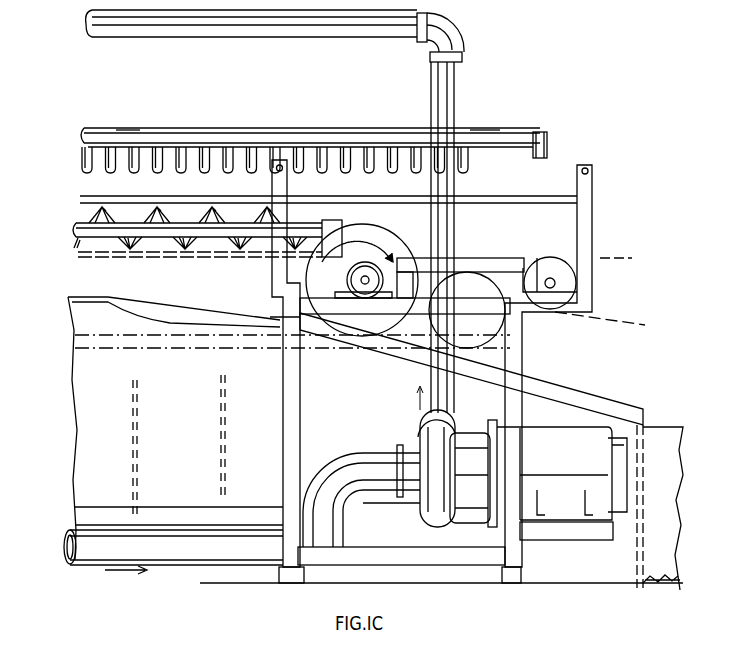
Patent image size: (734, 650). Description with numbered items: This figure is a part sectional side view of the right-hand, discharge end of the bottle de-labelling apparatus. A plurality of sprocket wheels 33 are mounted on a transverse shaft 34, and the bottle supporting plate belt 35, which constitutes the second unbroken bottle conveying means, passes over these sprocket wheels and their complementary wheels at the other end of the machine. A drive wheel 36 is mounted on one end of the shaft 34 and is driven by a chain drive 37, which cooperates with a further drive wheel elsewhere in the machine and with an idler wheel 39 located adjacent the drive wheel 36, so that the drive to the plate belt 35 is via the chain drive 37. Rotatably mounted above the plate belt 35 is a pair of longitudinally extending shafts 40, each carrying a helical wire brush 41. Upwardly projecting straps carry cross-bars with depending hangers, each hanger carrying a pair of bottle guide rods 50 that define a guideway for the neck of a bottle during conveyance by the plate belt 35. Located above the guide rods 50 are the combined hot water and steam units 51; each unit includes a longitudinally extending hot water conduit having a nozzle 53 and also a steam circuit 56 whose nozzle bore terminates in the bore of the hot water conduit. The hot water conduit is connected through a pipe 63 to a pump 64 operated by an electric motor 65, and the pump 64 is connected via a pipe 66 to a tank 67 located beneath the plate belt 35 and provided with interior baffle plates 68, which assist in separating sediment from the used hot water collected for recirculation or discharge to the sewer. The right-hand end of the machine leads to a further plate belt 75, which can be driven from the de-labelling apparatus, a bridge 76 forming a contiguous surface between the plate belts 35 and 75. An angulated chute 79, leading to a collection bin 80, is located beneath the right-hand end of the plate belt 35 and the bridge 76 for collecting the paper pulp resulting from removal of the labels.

The sprocket wheels 33 is at (347, 270).
The transverse shaft 34 is at (353, 285).
The bottle supporting plate belt 35 is at (157, 252).
The drive wheel 36 is at (386, 235).
The chain drive 37 is at (178, 346).
The idler wheel 39 is at (480, 275).
The longitudinally extending shafts 40 is at (165, 213).
The helical wire brush 41 is at (256, 219).
The bottle guide rods 50 is at (512, 195).
The combined hot water and steam units 51 is at (181, 121).
The nozzle 53 is at (468, 165).
The steam circuit 56 is at (528, 155).
The pipe 63 is at (104, 33).
The pump 64 is at (428, 513).
The electric motor 65 is at (655, 466).
The pipe 66 is at (125, 548).
The tank 67 is at (160, 434).
The interior baffle plates 68 is at (210, 437).
The plate belt 75 is at (614, 320).
The bridge 76 is at (518, 262).
The angulated chute 79 is at (618, 410).
The collection bin 80 is at (682, 545).